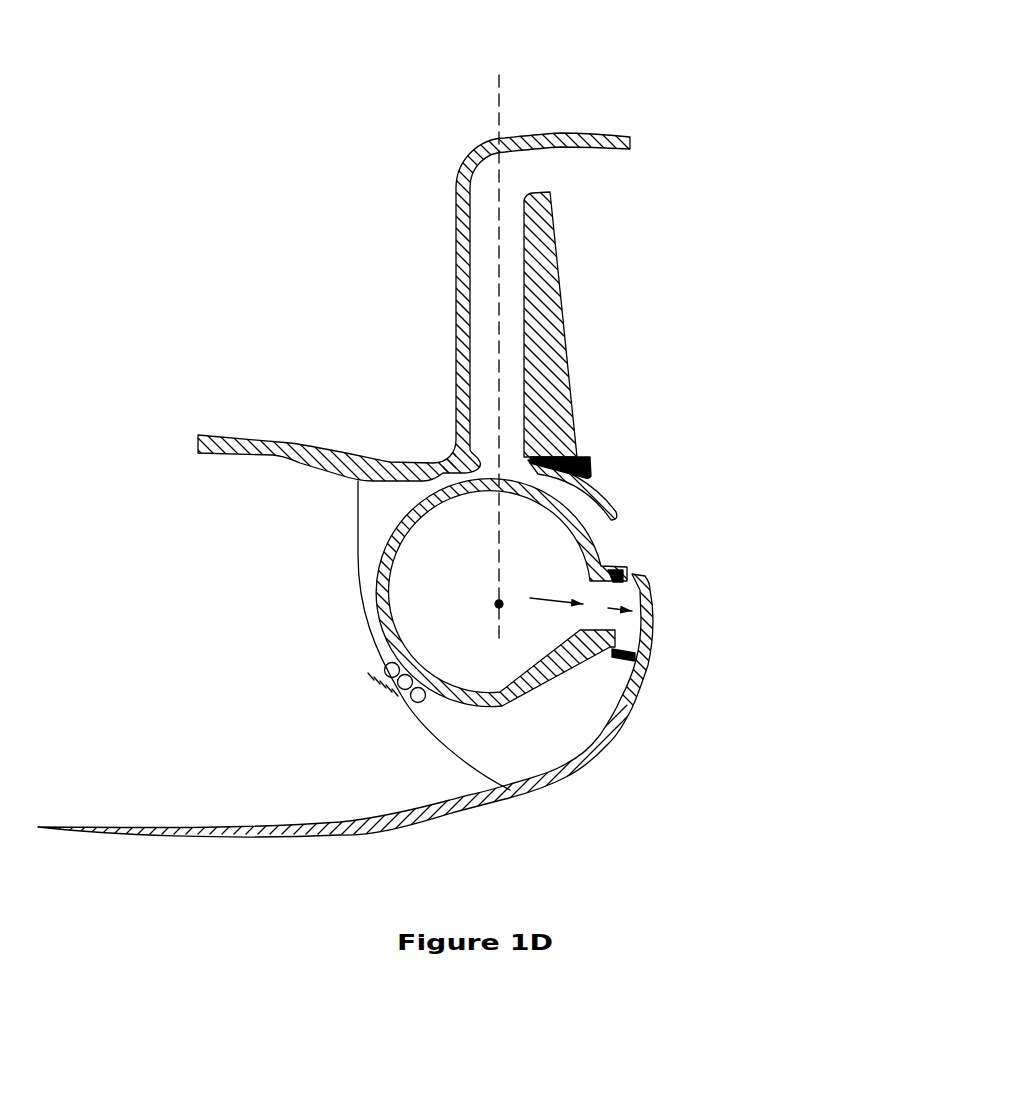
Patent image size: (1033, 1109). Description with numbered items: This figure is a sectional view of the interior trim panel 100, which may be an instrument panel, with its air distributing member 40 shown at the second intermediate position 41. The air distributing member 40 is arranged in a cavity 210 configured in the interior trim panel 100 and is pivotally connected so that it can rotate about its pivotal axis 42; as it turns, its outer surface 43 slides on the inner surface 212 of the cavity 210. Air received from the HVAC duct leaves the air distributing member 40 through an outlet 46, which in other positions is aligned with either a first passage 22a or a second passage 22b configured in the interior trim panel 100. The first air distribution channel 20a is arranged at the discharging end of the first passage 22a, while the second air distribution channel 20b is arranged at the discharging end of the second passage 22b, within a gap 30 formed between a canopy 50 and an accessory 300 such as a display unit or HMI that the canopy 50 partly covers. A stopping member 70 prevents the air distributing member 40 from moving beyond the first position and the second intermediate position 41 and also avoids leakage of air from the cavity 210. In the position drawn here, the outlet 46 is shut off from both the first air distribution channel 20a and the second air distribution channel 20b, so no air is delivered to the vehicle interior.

The interior trim panel 100 is at (395, 175).
The canopy 50 is at (575, 134).
The gap 30 is at (498, 291).
The stopping member 70 is at (455, 440).
The second passage 22b is at (540, 270).
The second air distribution channel 20b is at (550, 192).
The accessory 300 is at (565, 325).
The air distributing member 40 is at (492, 477).
The first air distribution channel 20a is at (616, 514).
The outlet 46 is at (625, 568).
The outer surface 43 is at (467, 717).
The first passage 22a is at (645, 575).
The pivotal axis 42 is at (499, 604).
The second intermediate position 41 is at (546, 698).
The cavity 210 is at (392, 518).
The inner surface 212 is at (385, 675).